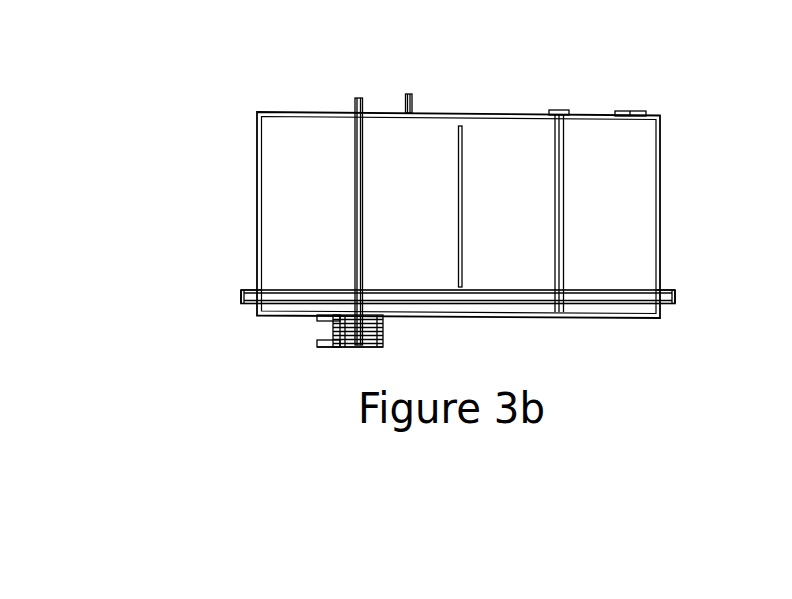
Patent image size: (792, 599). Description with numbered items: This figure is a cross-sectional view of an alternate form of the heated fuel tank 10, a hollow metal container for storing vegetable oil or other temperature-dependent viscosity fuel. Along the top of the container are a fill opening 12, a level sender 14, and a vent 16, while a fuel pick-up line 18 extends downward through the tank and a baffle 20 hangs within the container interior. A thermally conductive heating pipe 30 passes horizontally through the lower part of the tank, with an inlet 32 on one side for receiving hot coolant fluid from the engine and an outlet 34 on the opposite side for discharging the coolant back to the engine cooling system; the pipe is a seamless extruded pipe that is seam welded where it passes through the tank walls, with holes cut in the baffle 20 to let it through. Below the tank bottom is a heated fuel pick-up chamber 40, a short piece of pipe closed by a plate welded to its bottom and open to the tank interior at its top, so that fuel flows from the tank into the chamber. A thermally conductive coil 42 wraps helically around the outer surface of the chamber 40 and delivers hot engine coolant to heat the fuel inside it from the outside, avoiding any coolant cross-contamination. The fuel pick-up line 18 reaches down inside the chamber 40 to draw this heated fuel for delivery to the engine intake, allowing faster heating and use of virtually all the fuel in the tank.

The heated fuel tank 10 is at (198, 108).
The fill opening 12 is at (637, 110).
The level sender 14 is at (562, 110).
The vent 16 is at (413, 105).
The fuel pick-up line 18 is at (354, 106).
The baffle 20 is at (463, 200).
The heating pipe 30 is at (384, 291).
The inlet 32 is at (244, 300).
The outlet 34 is at (671, 292).
The heated fuel pick-up chamber 40 is at (368, 339).
The thermally conductive coil 42 is at (385, 333).